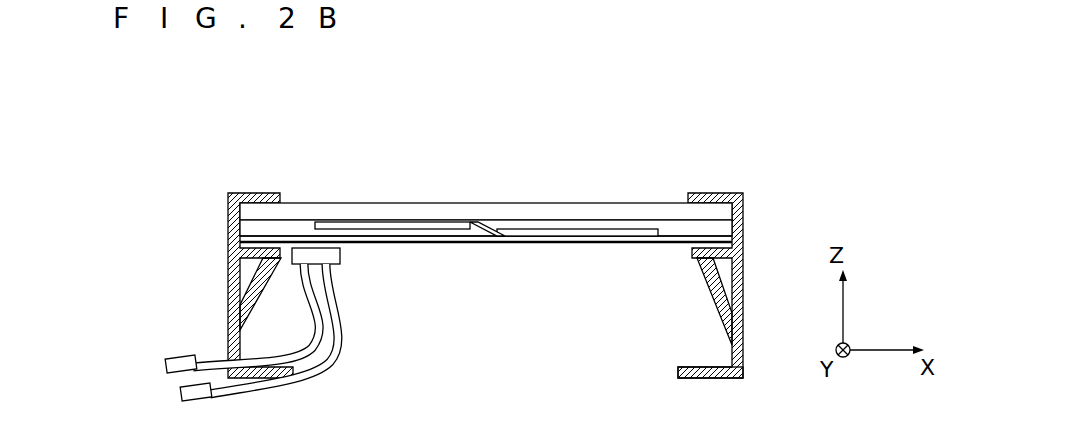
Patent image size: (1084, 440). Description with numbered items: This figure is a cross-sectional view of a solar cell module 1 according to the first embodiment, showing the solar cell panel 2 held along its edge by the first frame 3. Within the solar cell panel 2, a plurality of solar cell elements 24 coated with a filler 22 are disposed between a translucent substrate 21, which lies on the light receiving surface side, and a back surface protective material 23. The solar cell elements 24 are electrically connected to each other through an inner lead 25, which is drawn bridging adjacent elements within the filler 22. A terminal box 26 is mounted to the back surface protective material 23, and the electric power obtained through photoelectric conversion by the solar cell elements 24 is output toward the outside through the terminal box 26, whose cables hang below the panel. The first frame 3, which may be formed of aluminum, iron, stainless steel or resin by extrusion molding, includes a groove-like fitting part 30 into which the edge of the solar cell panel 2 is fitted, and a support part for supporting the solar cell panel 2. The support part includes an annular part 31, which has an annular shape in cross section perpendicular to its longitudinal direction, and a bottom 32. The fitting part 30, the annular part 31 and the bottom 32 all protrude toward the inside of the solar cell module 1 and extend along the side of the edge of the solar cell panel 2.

The solar cell module 1 is at (236, 168).
The solar cell panel 2 is at (538, 174).
The first frame 3 is at (745, 202).
The translucent substrate 21 is at (672, 211).
The filler 22 is at (301, 222).
The back surface protective material 23 is at (590, 243).
The solar cell elements 24 is at (390, 243).
The inner lead 25 is at (487, 243).
The terminal box 26 is at (339, 268).
The fitting part 30 is at (745, 222).
The annular part 31 is at (702, 302).
The bottom 32 is at (731, 379).